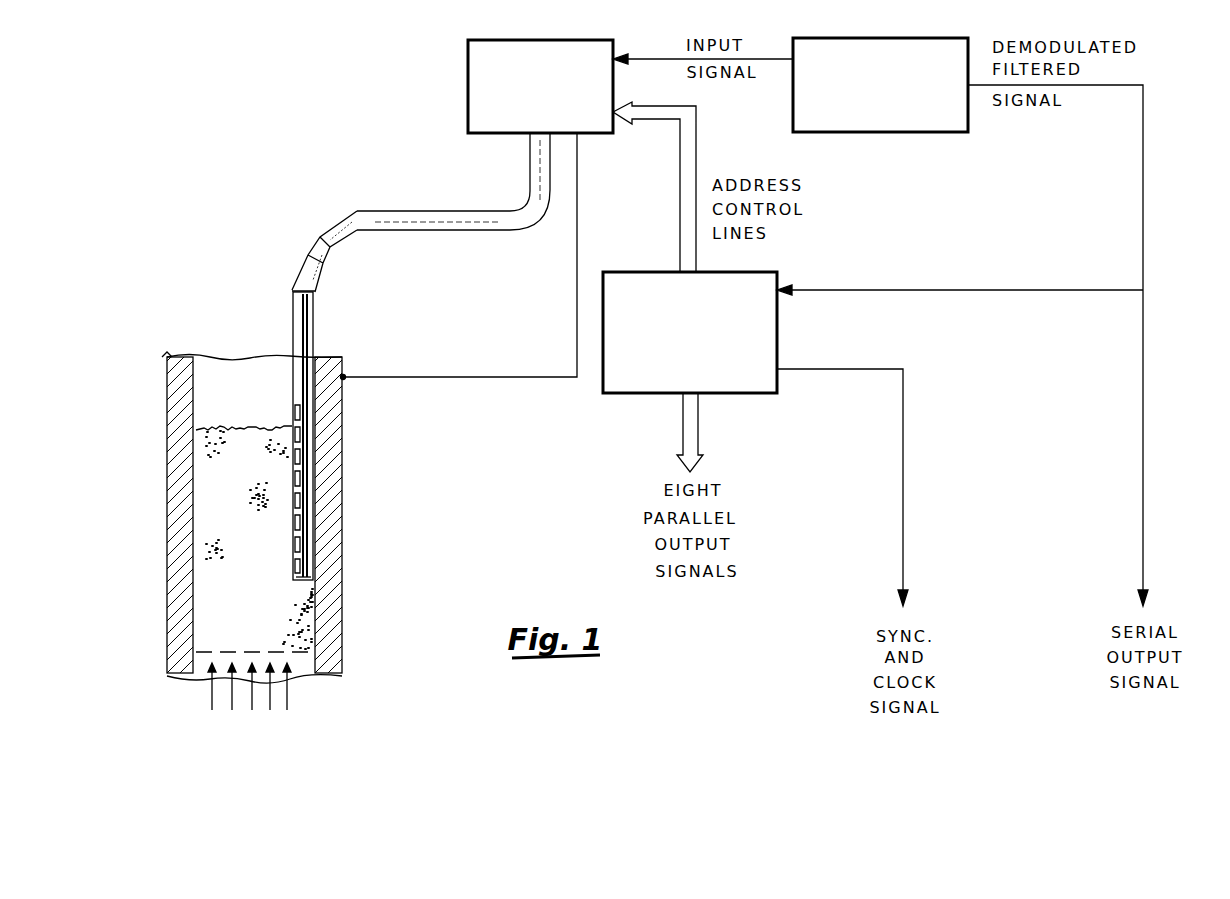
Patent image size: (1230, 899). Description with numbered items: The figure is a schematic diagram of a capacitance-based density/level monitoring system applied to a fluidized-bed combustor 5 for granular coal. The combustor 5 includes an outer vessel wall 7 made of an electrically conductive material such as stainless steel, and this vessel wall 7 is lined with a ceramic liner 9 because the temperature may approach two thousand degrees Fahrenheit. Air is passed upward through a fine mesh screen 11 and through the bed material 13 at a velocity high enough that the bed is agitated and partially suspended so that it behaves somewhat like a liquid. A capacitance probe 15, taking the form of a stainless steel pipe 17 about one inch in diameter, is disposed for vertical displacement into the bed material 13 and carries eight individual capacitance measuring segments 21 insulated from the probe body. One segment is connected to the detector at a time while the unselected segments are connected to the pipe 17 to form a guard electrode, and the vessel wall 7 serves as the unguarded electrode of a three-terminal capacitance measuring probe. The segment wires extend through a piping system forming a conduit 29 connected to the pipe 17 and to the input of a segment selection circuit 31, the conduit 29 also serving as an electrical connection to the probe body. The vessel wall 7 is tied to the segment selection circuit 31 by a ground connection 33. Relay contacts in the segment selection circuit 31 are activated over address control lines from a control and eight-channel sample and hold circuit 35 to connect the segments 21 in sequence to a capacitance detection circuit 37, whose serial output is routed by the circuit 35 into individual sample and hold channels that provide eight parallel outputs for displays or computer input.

The fluidized-bed combustor 5 is at (272, 512).
The outer vessel wall 7 is at (167, 552).
The ceramic liner 9 is at (183, 358).
The fine mesh screen 11 is at (266, 652).
The bed material 13 is at (236, 503).
The capacitance probe 15 is at (300, 243).
The stainless steel pipe 17 is at (295, 436).
The capacitance measuring segments 21 is at (295, 428).
The conduit 29 is at (420, 212).
The segment selection circuit 31 is at (468, 89).
The ground connection 33 is at (447, 377).
The control and eight-channel sample and hold circuit 35 is at (777, 350).
The capacitance detection circuit 37 is at (793, 112).